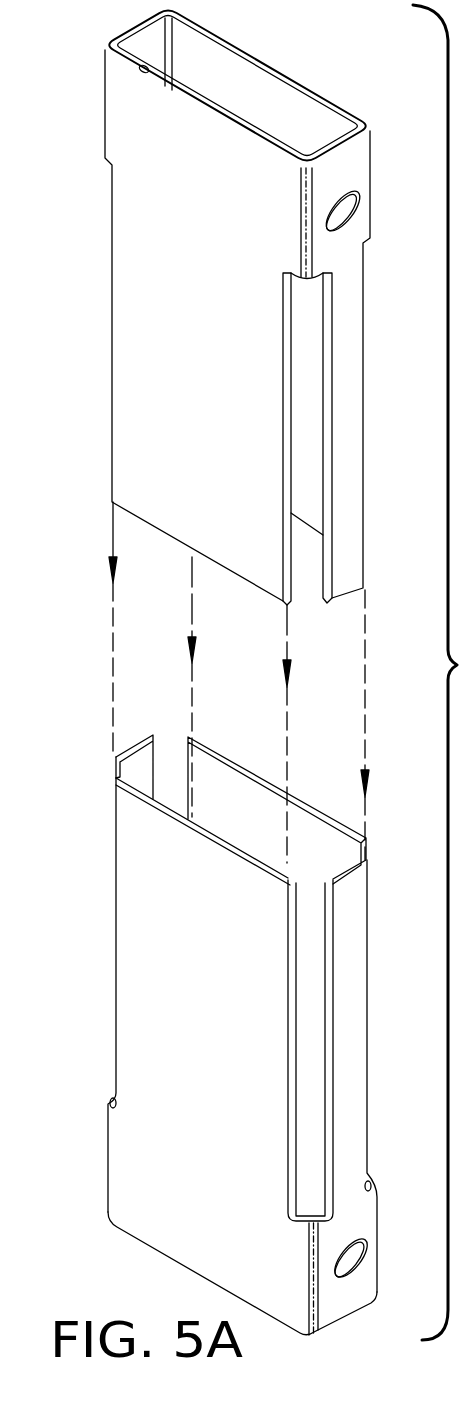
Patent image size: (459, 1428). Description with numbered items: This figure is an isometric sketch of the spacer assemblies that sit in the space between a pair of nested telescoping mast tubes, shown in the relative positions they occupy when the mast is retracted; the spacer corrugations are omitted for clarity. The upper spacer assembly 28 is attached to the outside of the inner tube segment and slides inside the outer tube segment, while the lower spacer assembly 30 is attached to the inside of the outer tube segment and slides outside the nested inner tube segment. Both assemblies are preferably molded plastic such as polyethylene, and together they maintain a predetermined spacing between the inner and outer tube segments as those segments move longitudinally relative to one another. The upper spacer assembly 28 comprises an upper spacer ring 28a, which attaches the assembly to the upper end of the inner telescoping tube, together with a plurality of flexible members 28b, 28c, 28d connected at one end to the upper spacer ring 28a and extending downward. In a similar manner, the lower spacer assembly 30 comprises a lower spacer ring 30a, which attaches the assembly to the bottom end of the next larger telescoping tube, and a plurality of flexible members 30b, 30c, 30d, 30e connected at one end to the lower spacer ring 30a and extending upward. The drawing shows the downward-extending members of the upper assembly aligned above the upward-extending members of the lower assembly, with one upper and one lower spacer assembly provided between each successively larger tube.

The upper spacer assembly 28 is at (90, 267).
The upper spacer ring 28a is at (205, 148).
The flexible member 28b is at (148, 438).
The flexible member 28c is at (343, 420).
The flexible member 28d is at (307, 480).
The lower spacer assembly 30 is at (92, 970).
The lower spacer ring 30a is at (150, 1227).
The flexible member 30b is at (148, 893).
The flexible member 30c is at (350, 1012).
The flexible member 30d is at (200, 740).
The flexible member 30e is at (133, 743).